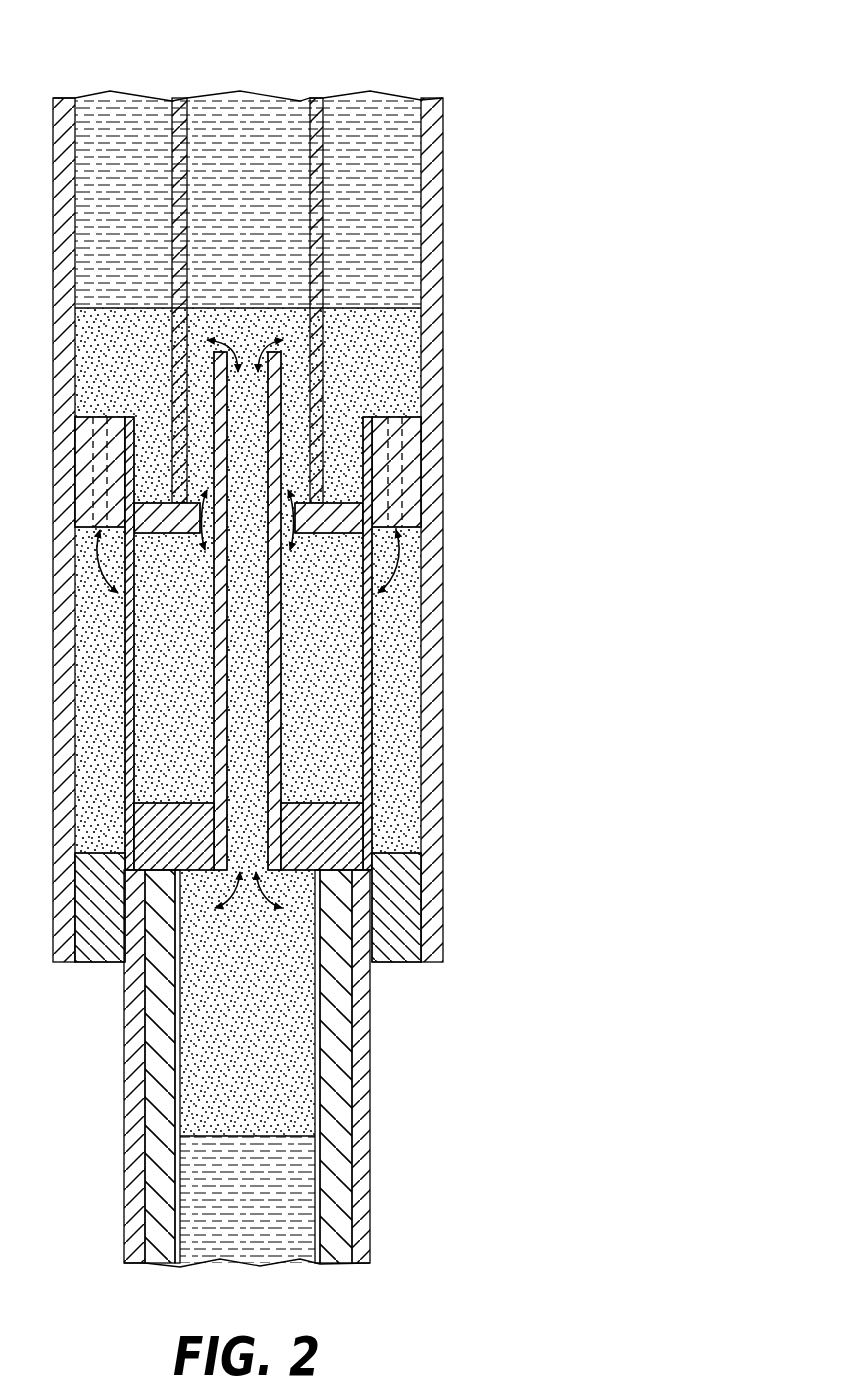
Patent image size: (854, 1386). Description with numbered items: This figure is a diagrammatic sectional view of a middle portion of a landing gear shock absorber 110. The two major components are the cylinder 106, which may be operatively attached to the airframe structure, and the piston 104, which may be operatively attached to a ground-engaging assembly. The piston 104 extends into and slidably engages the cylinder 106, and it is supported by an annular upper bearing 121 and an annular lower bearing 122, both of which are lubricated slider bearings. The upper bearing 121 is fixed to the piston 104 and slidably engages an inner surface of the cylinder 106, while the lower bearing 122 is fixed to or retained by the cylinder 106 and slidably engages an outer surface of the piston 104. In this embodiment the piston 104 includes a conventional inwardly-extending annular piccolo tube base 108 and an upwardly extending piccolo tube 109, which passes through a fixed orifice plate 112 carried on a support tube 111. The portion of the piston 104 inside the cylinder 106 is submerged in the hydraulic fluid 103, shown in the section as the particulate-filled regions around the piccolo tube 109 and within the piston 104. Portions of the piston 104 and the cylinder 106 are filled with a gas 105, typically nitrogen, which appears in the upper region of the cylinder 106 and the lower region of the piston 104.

The landing gear shock absorber 110 is at (299, 635).
The gas 105 is at (253, 121).
The support tube 111 is at (320, 178).
The hydraulic fluid 103 is at (401, 358).
The upper bearing 121 is at (410, 455).
The orifice plate 112 is at (343, 516).
The piccolo tube 109 is at (280, 622).
The cylinder 106 is at (447, 732).
The piccolo tube base 108 is at (325, 830).
The lower bearing 122 is at (410, 905).
The piston 104 is at (375, 1108).